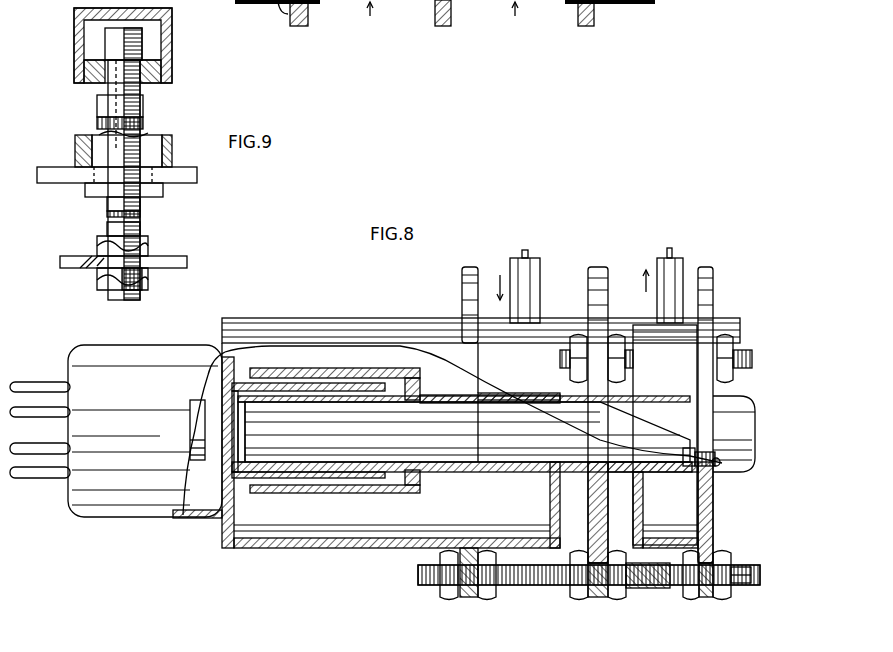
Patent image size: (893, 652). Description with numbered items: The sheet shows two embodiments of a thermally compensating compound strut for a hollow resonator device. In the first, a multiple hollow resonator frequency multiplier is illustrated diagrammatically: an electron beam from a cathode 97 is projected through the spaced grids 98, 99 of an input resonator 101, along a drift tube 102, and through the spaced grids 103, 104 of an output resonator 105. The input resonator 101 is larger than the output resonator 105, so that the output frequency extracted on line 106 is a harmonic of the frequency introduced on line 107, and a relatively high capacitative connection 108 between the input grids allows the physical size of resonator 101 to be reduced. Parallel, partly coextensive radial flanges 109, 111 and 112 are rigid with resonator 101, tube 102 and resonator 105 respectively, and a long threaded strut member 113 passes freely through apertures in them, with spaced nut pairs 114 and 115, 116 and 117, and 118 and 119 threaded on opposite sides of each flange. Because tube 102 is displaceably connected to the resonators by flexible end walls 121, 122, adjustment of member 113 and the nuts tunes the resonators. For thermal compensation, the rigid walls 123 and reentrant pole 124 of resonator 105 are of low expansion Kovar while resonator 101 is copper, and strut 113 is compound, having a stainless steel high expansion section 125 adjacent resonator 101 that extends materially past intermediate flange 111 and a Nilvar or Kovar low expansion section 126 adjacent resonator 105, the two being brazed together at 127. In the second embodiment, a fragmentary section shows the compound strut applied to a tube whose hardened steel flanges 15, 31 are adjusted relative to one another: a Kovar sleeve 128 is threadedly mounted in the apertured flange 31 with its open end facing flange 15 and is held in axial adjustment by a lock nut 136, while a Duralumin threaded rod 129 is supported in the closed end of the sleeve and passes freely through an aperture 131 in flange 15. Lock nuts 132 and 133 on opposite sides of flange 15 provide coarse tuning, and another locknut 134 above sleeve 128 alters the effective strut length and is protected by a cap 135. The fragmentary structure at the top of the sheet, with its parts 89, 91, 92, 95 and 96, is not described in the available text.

In FIG. 9, the annular metal flange 15 is at (75, 256).
In FIG. 9, the radial flange 31 is at (196, 180).
In FIG. 8, the block 89 is at (451, 10).
In FIG. 8, the block 91 is at (292, 17).
In FIG. 8, the block 92 is at (594, 18).
In FIG. 8, the force direction 95 is at (371, 17).
In FIG. 8, the force direction 96 is at (516, 17).
In FIG. 8, the cathode 97 is at (198, 426).
In FIG. 8, the input grid 98 is at (222, 466).
In FIG. 8, the input grid 99 is at (245, 432).
In FIG. 8, the input resonator 101 is at (340, 512).
In FIG. 8, the drift tube 102 is at (480, 470).
In FIG. 8, the output grid 103 is at (687, 448).
In FIG. 8, the output grid 104 is at (718, 468).
In FIG. 8, the output resonator 105 is at (683, 518).
In FIG. 8, the output line 106 is at (675, 272).
In FIG. 8, the input line 107 is at (520, 272).
In FIG. 8, the capacitative connection 108 is at (300, 495).
In FIG. 8, the radial flange 109 is at (467, 597).
In FIG. 8, the intermediate radial flange 111 is at (597, 597).
In FIG. 8, the radial flange 112 is at (706, 597).
In FIG. 8, the threaded strut member 113 is at (738, 568).
In FIG. 8, the nut 114 is at (447, 594).
In FIG. 8, the nut 115 is at (488, 596).
In FIG. 8, the nut 116 is at (576, 595).
In FIG. 8, the nut 117 is at (616, 598).
In FIG. 8, the nut 118 is at (688, 594).
In FIG. 8, the nut 119 is at (724, 594).
In FIG. 8, the flexible resonator end wall 121 is at (551, 492).
In FIG. 8, the flexible resonator end wall 122 is at (643, 502).
In FIG. 8, the rigid wall 123 is at (640, 330).
In FIG. 8, the reentrant pole 124 is at (664, 472).
In FIG. 8, the high thermal expansion section 125 is at (528, 585).
In FIG. 8, the low thermal expansion section 126 is at (650, 590).
In FIG. 8, the brazed joint 127 is at (633, 590).
In FIG. 9, the sleeve 128 is at (158, 138).
In FIG. 9, the threaded rod 129 is at (107, 214).
In FIG. 9, the aperture 131 is at (98, 268).
In FIG. 9, the lock nut 132 is at (148, 247).
In FIG. 9, the lock nut 133 is at (148, 272).
In FIG. 9, the locknut 134 is at (146, 45).
In FIG. 9, the cap 135 is at (80, 50).
In FIG. 9, the lock nut 136 is at (78, 150).